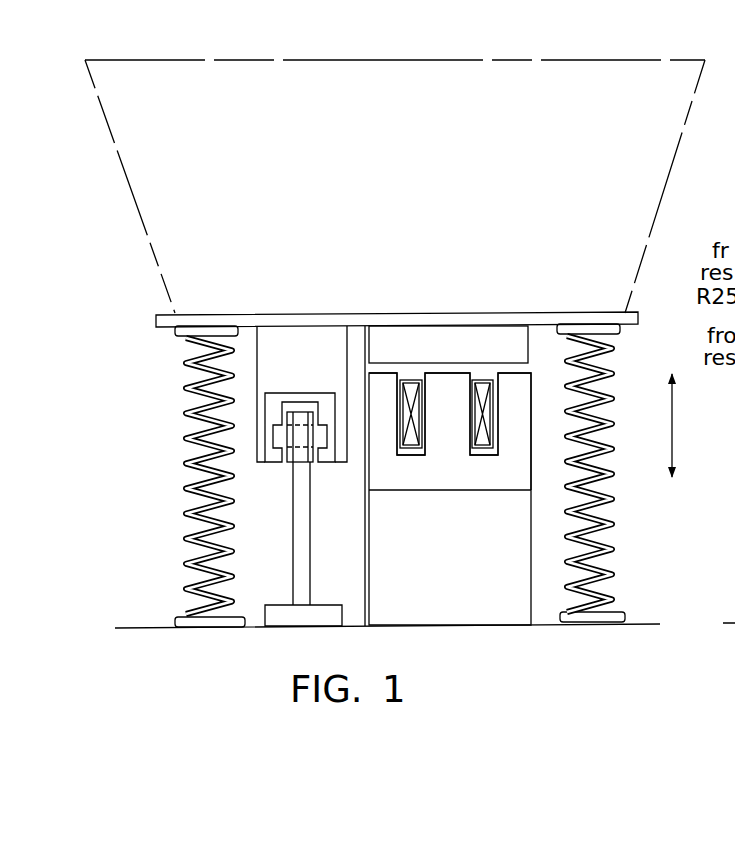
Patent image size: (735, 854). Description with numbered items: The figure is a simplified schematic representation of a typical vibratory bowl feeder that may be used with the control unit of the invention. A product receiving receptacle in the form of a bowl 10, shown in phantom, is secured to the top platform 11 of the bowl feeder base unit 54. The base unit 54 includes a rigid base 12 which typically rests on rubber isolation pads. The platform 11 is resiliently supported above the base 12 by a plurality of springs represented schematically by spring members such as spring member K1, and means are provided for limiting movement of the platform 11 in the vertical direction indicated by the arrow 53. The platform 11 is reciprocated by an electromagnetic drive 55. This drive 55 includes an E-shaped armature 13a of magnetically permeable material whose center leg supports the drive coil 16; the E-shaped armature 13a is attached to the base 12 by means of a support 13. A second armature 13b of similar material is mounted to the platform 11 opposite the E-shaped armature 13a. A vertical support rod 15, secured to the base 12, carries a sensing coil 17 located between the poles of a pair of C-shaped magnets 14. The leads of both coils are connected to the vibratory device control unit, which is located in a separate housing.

The bowl 10 is at (677, 174).
The top platform 11 is at (639, 312).
The rigid base 12 is at (660, 624).
The support 13 is at (464, 579).
The E-shaped armature 13a is at (513, 394).
The armature 13b is at (416, 337).
The C-shaped magnets 14 is at (320, 402).
The vertical support rod 15 is at (312, 532).
The drive coil 16 is at (410, 460).
The sensing coil 17 is at (300, 468).
The arrow 53 is at (673, 430).
The bowl feeder base unit 54 is at (172, 374).
The electromagnetic drive 55 is at (467, 496).
The spring member K1 is at (187, 511).